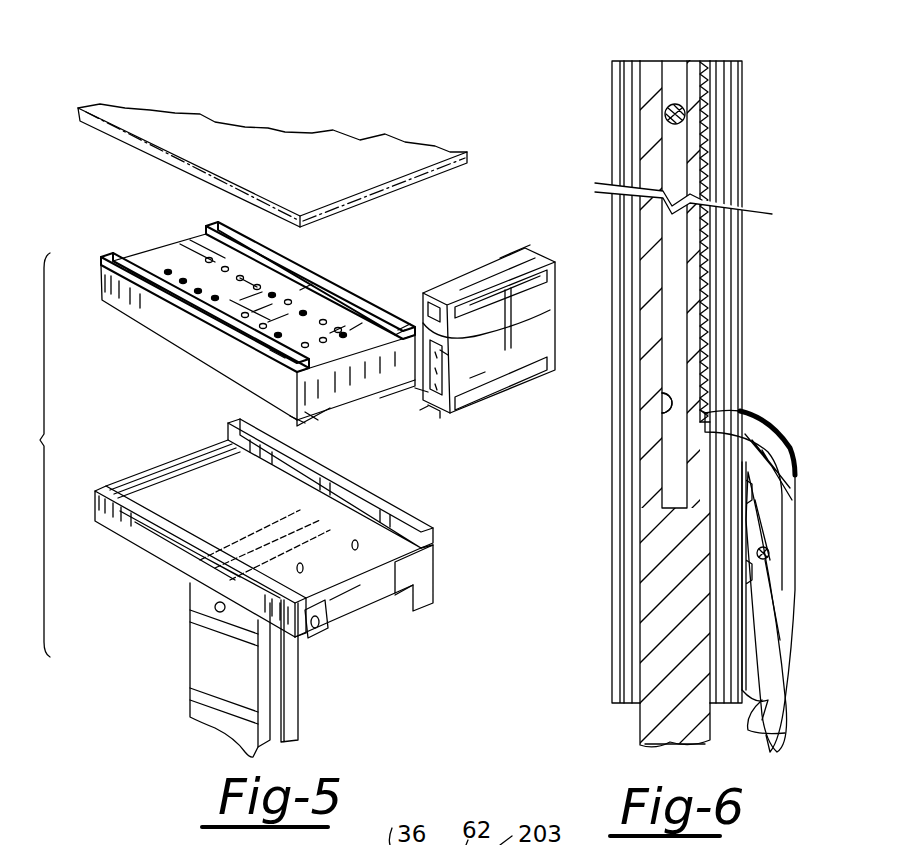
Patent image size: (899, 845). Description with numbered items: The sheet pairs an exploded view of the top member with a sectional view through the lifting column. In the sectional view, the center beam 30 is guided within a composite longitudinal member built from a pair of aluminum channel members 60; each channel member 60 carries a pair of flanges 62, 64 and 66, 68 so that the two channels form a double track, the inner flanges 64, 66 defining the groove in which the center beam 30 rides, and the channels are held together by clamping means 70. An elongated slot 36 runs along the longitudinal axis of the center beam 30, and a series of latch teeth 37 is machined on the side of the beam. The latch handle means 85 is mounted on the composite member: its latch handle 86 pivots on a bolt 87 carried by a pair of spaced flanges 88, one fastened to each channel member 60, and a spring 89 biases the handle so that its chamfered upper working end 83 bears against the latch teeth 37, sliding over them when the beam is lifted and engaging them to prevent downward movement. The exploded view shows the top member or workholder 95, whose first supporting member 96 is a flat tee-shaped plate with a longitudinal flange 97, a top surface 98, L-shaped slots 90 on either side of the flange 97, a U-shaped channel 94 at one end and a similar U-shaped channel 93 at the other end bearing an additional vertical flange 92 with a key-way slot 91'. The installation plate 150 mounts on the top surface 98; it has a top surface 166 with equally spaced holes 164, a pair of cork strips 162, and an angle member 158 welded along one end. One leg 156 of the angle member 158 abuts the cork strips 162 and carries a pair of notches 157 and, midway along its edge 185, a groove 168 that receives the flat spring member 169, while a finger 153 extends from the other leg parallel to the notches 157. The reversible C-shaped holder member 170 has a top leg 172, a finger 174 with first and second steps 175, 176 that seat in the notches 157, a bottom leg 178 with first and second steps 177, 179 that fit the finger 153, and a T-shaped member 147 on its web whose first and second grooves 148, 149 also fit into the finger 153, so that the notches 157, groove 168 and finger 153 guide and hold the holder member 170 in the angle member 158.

In FIG. 6, the center beam 30 is at (710, 730).
In FIG. 6, the elongated slot 36 is at (700, 418).
In FIG. 6, the latch teeth 37 is at (700, 302).
In FIG. 5, the channel members 60 is at (212, 713).
In FIG. 6, the channel members 60 is at (449, 374).
In FIG. 6, the flange 62 is at (617, 63).
In FIG. 6, the flange 64 is at (638, 63).
In FIG. 6, the flange 66 is at (720, 63).
In FIG. 6, the flange 68 is at (742, 63).
In FIG. 6, the clamping means 70 is at (677, 84).
In FIG. 6, the upper working end 83 is at (705, 414).
In FIG. 6, the latch handle means 85 is at (791, 581).
In FIG. 6, the latch handle 86 is at (795, 568).
In FIG. 6, the bolt 87 is at (785, 525).
In FIG. 6, the flanges 88 is at (775, 670).
In FIG. 6, the spring 89 is at (795, 733).
In FIG. 5, the L-shaped slots 90 is at (297, 637).
In FIG. 5, the slot 91' is at (434, 622).
In FIG. 5, the vertical flange 92 is at (435, 567).
In FIG. 5, the U-shaped channel 93 is at (418, 545).
In FIG. 5, the U-shaped channel 94 is at (140, 555).
In FIG. 5, the top member 95 is at (289, 578).
In FIG. 5, the first supporting member 96 is at (263, 519).
In FIG. 5, the flange 97 is at (327, 610).
In FIG. 5, the top surface 98 is at (345, 565).
In FIG. 5, the T-shaped member 147 is at (425, 397).
In FIG. 5, the first groove 148 is at (478, 375).
In FIG. 5, the second groove 149 is at (443, 352).
In FIG. 5, the installation plate 150 is at (160, 250).
In FIG. 5, the finger 153 is at (297, 418).
In FIG. 5, the one leg 156 is at (400, 325).
In FIG. 5, the notches 157 is at (403, 325).
In FIG. 5, the angle member 158 is at (310, 420).
In FIG. 5, the cork strips 162 is at (310, 270).
In FIG. 5, the holes 164 is at (282, 328).
In FIG. 5, the top surface 166 is at (247, 275).
In FIG. 5, the groove 168 is at (338, 330).
In FIG. 5, the flat spring member 169 is at (277, 355).
In FIG. 5, the holder member 170 is at (530, 262).
In FIG. 5, the top leg 172 is at (510, 265).
In FIG. 5, the finger 174 is at (455, 343).
In FIG. 5, the first step 175 is at (517, 325).
In FIG. 5, the second step 176 is at (545, 293).
In FIG. 5, the first step 177 is at (420, 415).
In FIG. 5, the bottom leg 178 is at (432, 410).
In FIG. 5, the second step 179 is at (455, 407).
In FIG. 5, the edge 185 is at (357, 325).